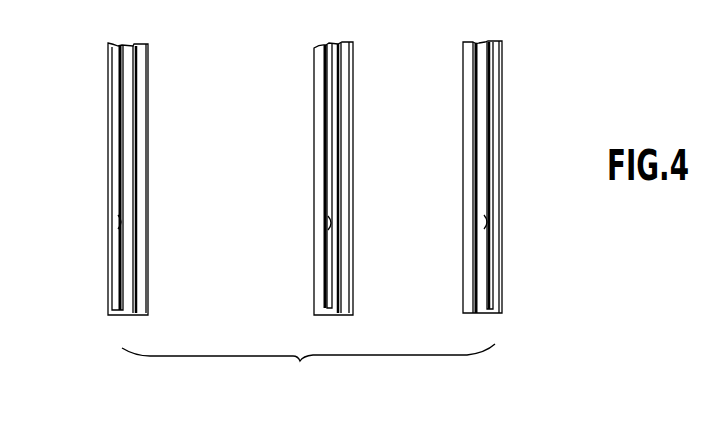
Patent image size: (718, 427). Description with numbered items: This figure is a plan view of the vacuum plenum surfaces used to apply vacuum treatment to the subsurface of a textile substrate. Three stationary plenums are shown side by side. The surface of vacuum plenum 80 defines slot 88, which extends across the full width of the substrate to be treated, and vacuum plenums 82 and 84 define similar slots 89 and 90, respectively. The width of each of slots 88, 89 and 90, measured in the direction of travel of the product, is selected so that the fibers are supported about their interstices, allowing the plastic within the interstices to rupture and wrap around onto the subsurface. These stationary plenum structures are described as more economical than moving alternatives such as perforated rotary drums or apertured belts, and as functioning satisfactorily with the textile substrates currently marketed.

The vacuum plenum 80 is at (108, 152).
The vacuum plenum 82 is at (314, 153).
The vacuum plenum 84 is at (463, 152).
The slot 88 is at (121, 222).
The slot 89 is at (330, 223).
The slot 90 is at (486, 222).